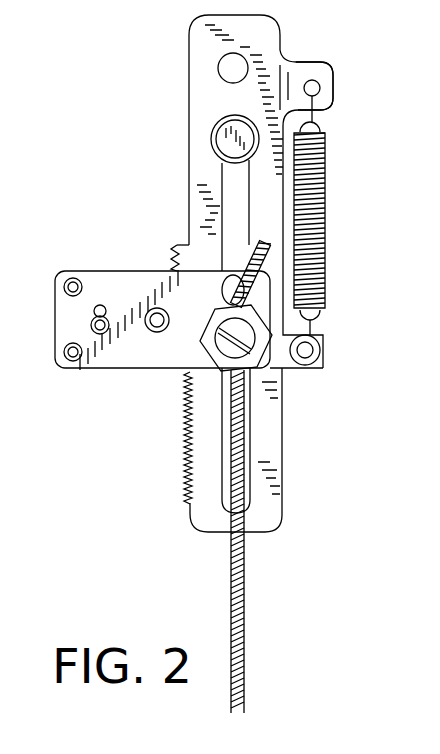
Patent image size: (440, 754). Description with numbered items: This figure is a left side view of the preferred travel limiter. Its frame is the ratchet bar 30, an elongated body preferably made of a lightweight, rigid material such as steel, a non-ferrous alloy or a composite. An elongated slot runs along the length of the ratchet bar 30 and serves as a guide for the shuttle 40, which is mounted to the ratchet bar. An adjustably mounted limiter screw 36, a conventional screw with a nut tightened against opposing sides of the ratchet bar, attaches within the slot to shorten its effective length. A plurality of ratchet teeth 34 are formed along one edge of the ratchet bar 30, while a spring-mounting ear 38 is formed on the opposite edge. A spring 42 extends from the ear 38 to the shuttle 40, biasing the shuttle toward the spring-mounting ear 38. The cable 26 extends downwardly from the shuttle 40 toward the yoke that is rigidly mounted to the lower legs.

The cable 26 is at (245, 565).
The ratchet bar 30 is at (189, 203).
The ratchet teeth 34 is at (168, 460).
The limiter screw 36 is at (213, 127).
The spring-mounting ear 38 is at (334, 92).
The shuttle 40 is at (113, 358).
The spring 42 is at (326, 187).